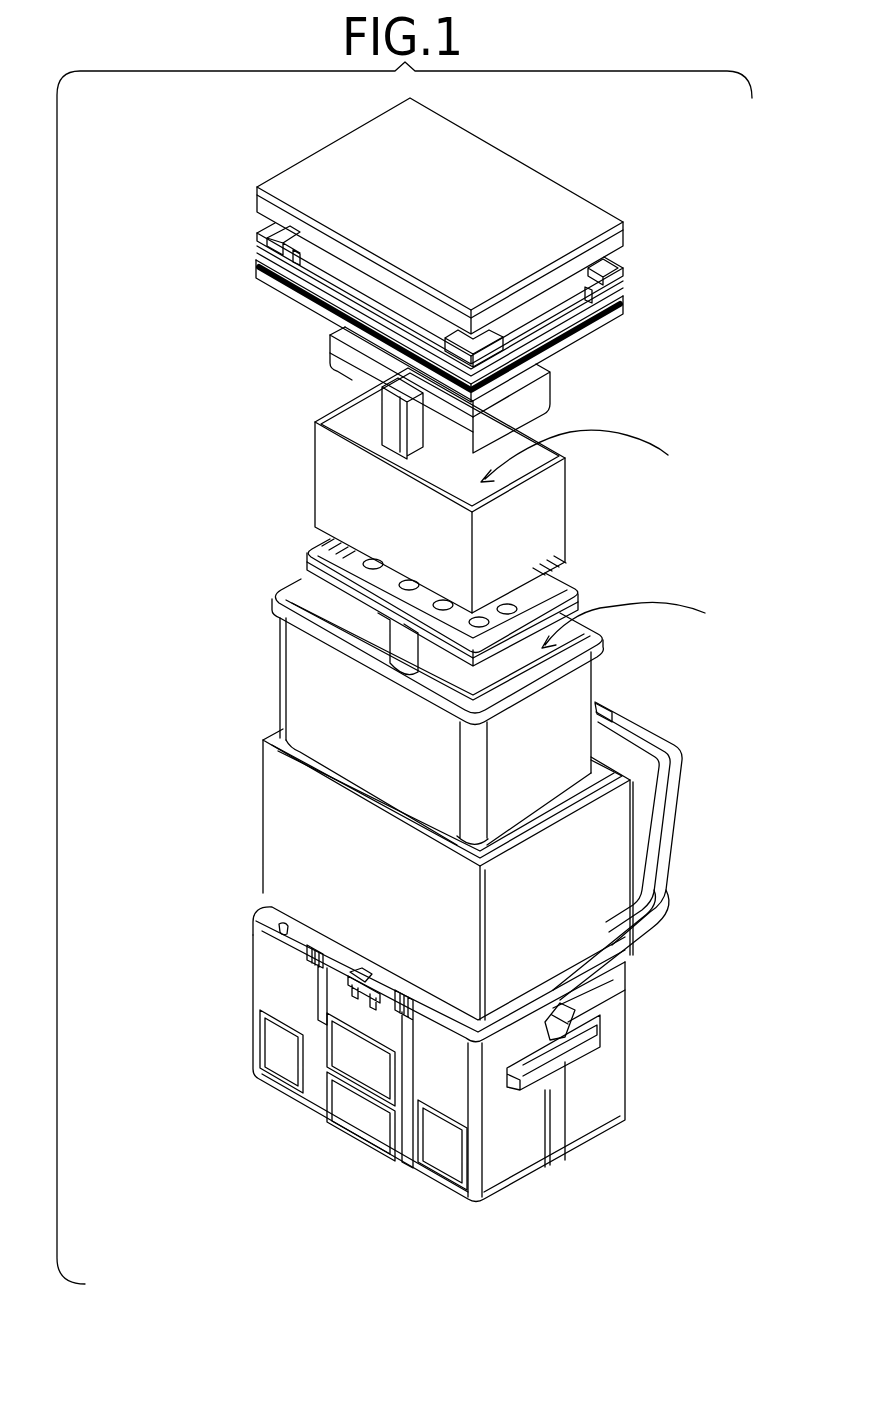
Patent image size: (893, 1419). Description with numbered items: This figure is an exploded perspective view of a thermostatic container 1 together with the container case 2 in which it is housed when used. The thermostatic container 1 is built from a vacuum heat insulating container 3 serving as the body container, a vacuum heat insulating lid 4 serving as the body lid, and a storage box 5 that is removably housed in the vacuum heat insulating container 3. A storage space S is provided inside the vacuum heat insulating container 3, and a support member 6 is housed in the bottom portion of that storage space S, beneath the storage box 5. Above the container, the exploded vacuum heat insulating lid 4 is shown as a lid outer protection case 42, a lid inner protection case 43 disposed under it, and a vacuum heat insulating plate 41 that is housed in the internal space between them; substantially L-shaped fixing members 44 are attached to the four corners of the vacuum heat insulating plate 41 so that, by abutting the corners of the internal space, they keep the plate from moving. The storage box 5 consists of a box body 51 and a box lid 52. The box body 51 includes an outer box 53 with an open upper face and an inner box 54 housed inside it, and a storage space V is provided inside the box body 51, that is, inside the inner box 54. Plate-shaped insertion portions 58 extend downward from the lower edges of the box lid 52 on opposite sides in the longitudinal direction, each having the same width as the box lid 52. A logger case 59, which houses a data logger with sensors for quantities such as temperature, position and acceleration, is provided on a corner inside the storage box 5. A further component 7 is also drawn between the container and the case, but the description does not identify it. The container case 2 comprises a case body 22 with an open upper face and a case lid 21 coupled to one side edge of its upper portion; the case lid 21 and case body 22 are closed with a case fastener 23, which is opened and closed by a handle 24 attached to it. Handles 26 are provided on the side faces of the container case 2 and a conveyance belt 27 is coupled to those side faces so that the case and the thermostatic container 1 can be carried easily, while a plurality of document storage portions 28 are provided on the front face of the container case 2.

The thermostatic container 1 is at (117, 236).
The container case 2 is at (677, 1056).
The vacuum heat insulating container 3 is at (302, 675).
The vacuum heat insulating lid 4 is at (162, 182).
The storage box 5 is at (162, 355).
The support member 6 is at (302, 548).
The outer jacket 7 is at (283, 795).
The case lid 21 is at (672, 805).
The case body 22 is at (503, 1130).
The case fastener 23 is at (282, 928).
The handle 24 is at (347, 998).
The handles 26 is at (577, 1057).
The conveyance belt 27 is at (632, 952).
The document storage portions 28 is at (282, 1062).
The vacuum heat insulating plate 41 is at (337, 266).
The lid outer protection case 42 is at (266, 203).
The lid inner protection case 43 is at (323, 308).
The fixing members 44 is at (268, 240).
The box body 51 is at (330, 494).
The box lid 52 is at (330, 338).
The outer box 53 is at (545, 533).
The inner box 54 is at (545, 480).
The insertion portions 58 is at (327, 360).
The logger case 59 is at (392, 438).
The storage space V is at (583, 456).
The storage space S is at (632, 623).